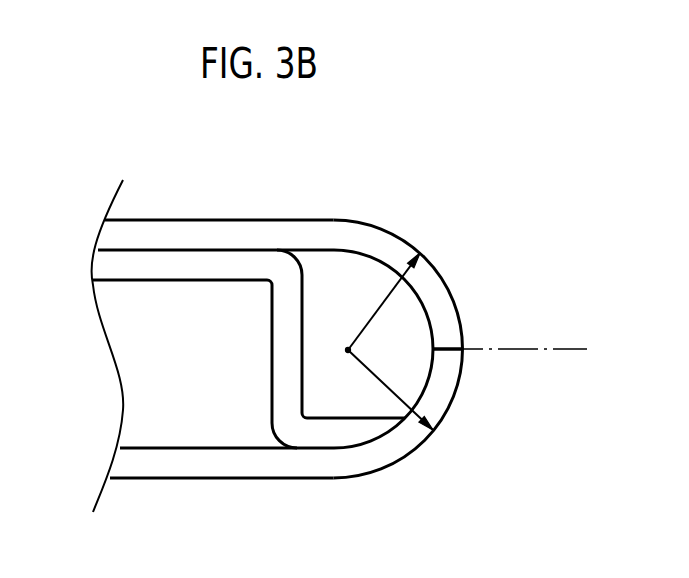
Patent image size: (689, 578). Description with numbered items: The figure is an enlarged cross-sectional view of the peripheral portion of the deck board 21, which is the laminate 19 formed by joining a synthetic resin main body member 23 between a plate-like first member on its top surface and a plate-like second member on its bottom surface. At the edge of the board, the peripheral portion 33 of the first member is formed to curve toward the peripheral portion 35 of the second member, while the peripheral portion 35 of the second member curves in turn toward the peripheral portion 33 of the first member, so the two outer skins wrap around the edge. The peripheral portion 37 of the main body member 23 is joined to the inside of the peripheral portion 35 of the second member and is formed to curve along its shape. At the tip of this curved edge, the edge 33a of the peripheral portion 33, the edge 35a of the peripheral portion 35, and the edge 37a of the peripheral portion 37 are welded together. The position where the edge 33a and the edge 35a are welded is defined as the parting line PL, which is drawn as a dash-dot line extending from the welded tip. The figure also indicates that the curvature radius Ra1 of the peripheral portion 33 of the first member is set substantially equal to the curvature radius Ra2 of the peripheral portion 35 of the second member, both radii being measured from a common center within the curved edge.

The laminate 19 is at (271, 294).
The deck board 21 is at (216, 334).
The main body member 23 is at (282, 372).
The peripheral portion of the first member 33 is at (433, 279).
The edge of the peripheral portion of the first member 33a is at (448, 350).
The peripheral portion of the second member 35 is at (403, 443).
The edge of the peripheral portion of the second member 35a is at (455, 349).
The peripheral portion of the main body member 37 is at (430, 387).
The edge of the peripheral portion of the main body member 37a is at (440, 349).
The parting line PL is at (510, 335).
The curvature radius of the peripheral portion of the first member Ra1 is at (378, 312).
The curvature radius of the peripheral portion of the second member Ra2 is at (384, 384).